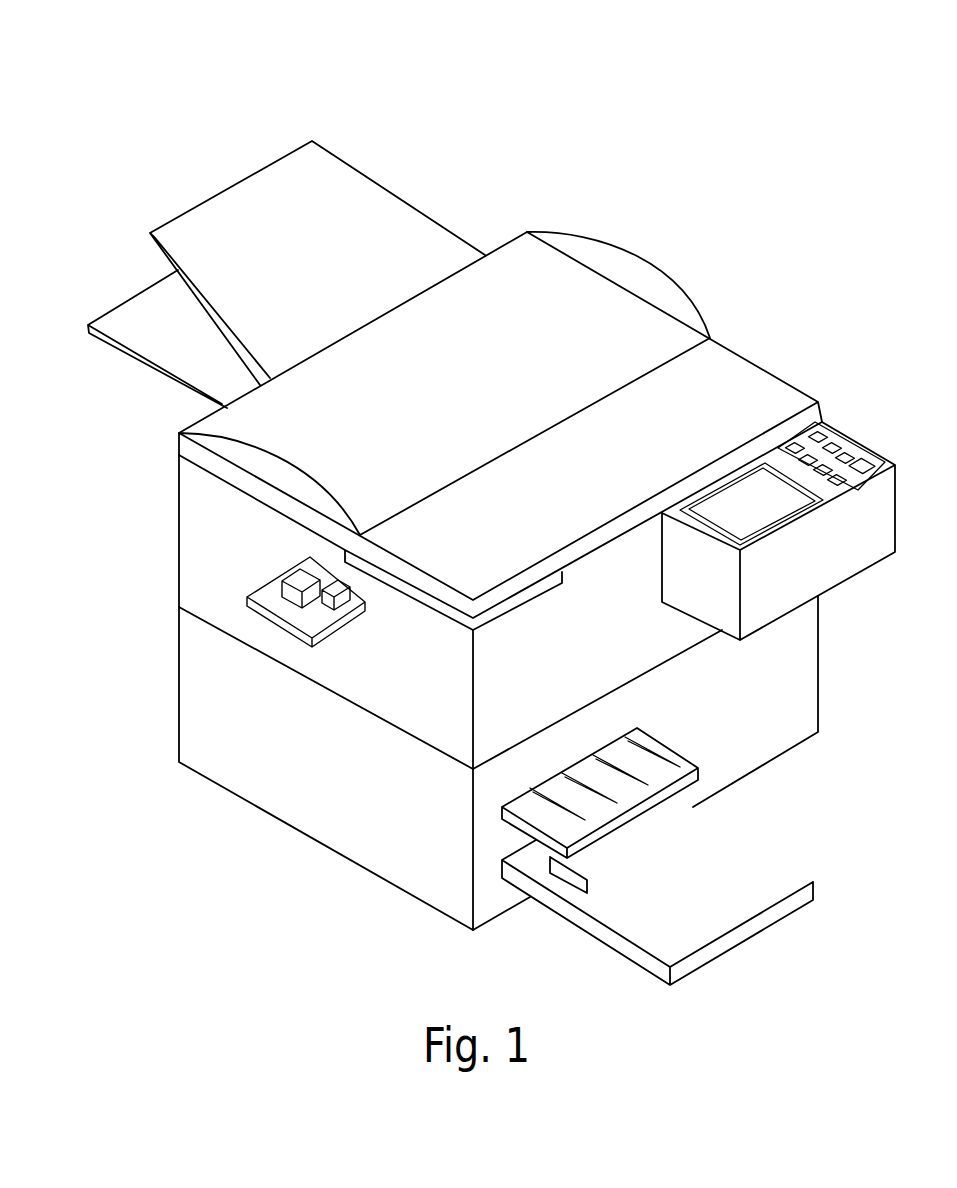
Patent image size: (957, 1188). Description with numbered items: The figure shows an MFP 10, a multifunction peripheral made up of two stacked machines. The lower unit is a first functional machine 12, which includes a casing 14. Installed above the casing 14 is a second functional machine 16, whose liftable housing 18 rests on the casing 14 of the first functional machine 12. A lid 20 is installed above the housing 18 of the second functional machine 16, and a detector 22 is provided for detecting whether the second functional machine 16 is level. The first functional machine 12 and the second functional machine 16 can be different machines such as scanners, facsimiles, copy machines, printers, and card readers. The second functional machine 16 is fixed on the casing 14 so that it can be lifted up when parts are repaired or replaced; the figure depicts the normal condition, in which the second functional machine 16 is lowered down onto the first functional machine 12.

The MFP 10 is at (467, 497).
The first functional machine 12 is at (433, 790).
The casing 14 is at (347, 860).
The second functional machine 16 is at (467, 455).
The housing 18 is at (179, 575).
The lid 20 is at (780, 380).
The detector 22 is at (337, 630).